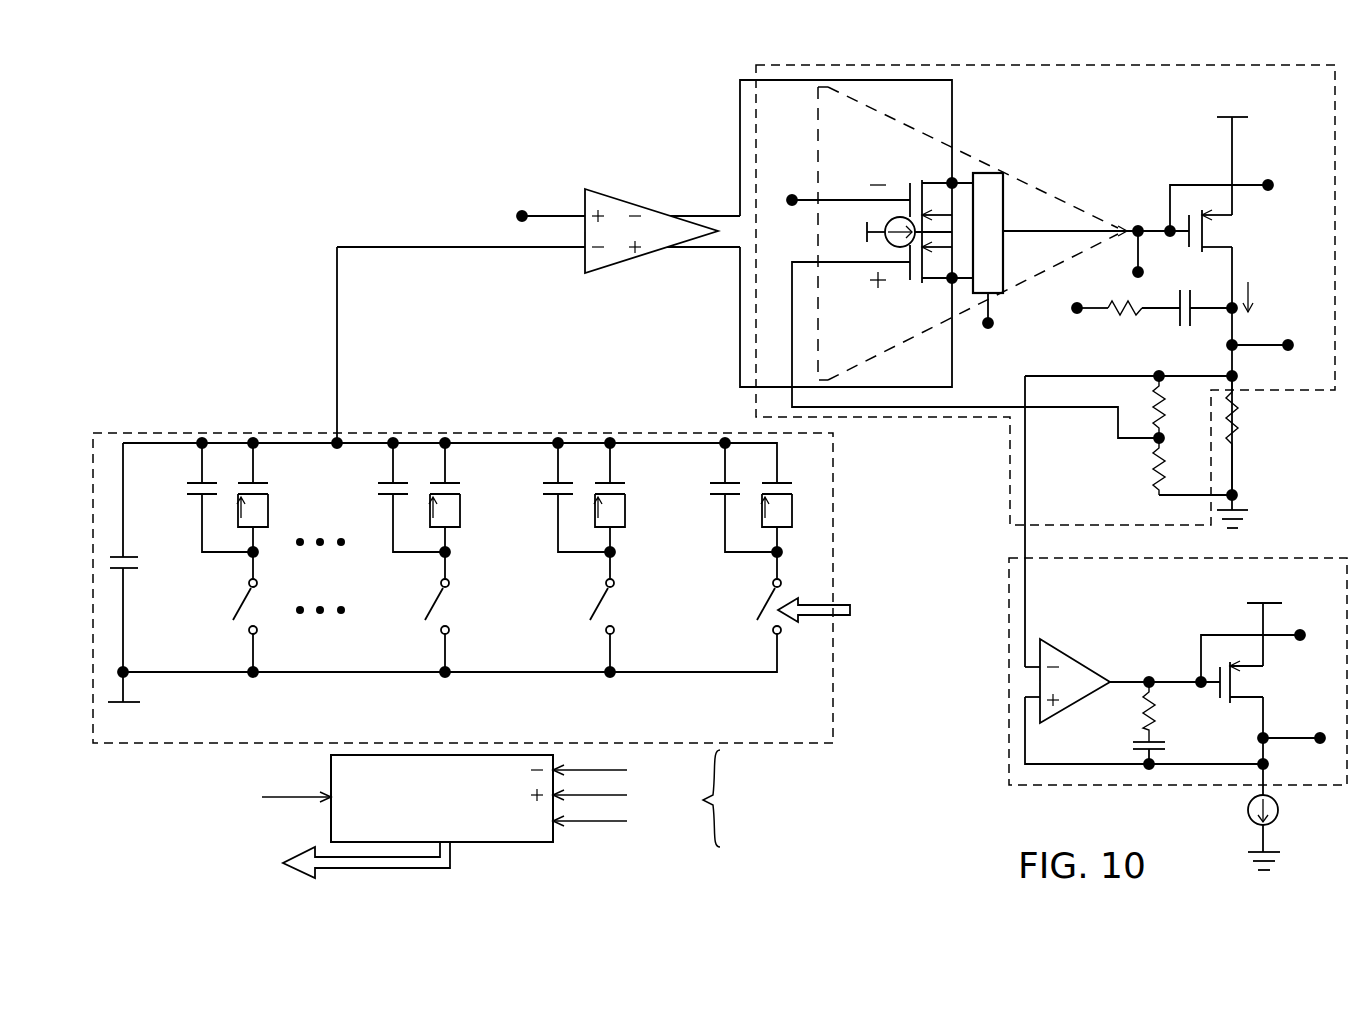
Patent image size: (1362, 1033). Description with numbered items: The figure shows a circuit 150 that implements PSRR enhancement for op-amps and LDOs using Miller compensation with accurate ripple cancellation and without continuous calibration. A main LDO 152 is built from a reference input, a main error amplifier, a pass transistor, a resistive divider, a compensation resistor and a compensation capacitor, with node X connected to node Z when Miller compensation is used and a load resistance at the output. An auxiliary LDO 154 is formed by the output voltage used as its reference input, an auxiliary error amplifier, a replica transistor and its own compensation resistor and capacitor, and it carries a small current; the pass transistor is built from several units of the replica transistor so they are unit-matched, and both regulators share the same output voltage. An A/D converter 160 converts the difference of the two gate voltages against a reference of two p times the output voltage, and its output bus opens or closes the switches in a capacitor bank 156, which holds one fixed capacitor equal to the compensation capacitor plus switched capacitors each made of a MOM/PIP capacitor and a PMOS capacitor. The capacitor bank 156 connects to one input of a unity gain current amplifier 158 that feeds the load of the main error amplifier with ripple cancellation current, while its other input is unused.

The circuit 150 is at (328, 132).
The main LDO 152 is at (756, 66).
The auxiliary LDO 154 is at (1302, 557).
The capacitor bank 156 is at (222, 432).
The current amplifier 158 is at (618, 195).
The A/D converter 160 is at (331, 771).